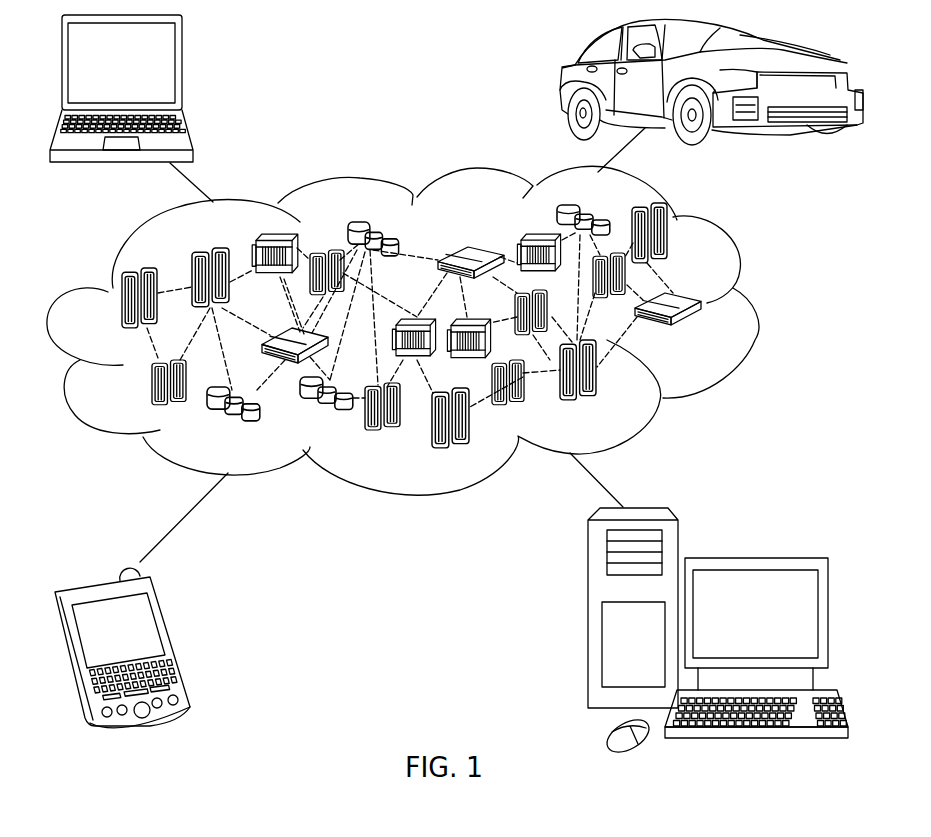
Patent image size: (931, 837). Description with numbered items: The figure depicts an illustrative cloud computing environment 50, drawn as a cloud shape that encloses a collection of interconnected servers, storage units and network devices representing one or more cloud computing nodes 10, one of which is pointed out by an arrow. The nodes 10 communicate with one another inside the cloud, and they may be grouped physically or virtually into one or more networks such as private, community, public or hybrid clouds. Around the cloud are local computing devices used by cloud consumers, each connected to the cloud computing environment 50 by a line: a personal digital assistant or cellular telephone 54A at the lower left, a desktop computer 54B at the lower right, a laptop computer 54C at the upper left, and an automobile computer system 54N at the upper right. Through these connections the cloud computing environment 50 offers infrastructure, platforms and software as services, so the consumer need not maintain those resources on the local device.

The cloud computing node 10 is at (706, 335).
The cloud computing environment 50 is at (425, 330).
The personal digital assistant or cellular telephone 54A is at (173, 640).
The desktop computer 54B is at (752, 558).
The laptop computer 54C is at (184, 70).
The automobile computer system 54N is at (562, 85).